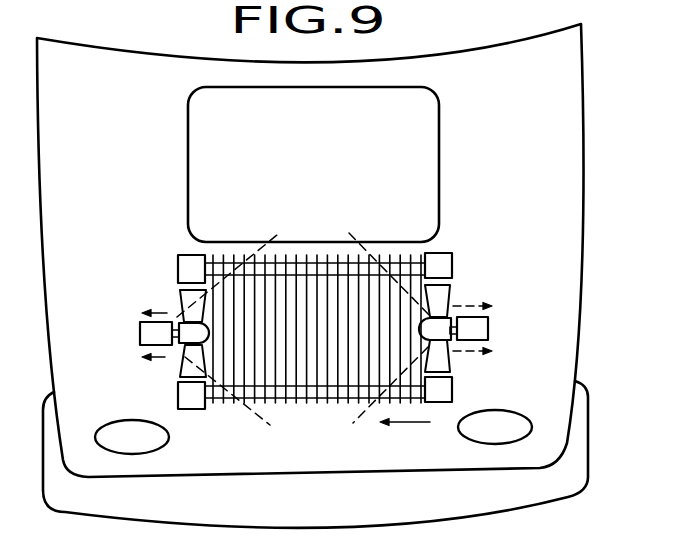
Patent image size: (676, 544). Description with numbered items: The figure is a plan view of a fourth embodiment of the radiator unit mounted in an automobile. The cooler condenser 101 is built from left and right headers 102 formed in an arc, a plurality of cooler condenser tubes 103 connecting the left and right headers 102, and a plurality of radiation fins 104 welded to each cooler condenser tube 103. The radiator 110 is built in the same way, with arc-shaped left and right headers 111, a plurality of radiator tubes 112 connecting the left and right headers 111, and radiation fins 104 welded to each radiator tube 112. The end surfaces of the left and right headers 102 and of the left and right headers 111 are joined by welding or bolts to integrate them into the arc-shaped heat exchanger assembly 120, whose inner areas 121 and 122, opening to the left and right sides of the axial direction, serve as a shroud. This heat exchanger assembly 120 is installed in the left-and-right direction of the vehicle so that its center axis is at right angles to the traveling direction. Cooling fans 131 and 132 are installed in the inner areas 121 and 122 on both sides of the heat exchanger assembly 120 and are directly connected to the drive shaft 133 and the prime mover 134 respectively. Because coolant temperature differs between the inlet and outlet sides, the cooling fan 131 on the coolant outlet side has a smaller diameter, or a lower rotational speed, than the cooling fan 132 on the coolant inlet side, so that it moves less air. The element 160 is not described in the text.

The cooler condenser 101 is at (466, 252).
The left and right headers 102 is at (185, 258).
The cooler condenser tubes 103 is at (215, 255).
The radiation fins 104 is at (317, 370).
The radiator 110 is at (468, 397).
The left and right headers 111 is at (190, 397).
The radiator tubes 112 is at (287, 395).
The heat exchanger assembly 120 is at (338, 420).
The inner area 121 is at (178, 293).
The inner area 122 is at (453, 292).
The cooling fan 131 is at (182, 373).
The cooling fan 132 is at (446, 363).
The drive shaft 133 is at (145, 337).
The prime mover 134 is at (478, 328).
The engine 160 is at (424, 112).